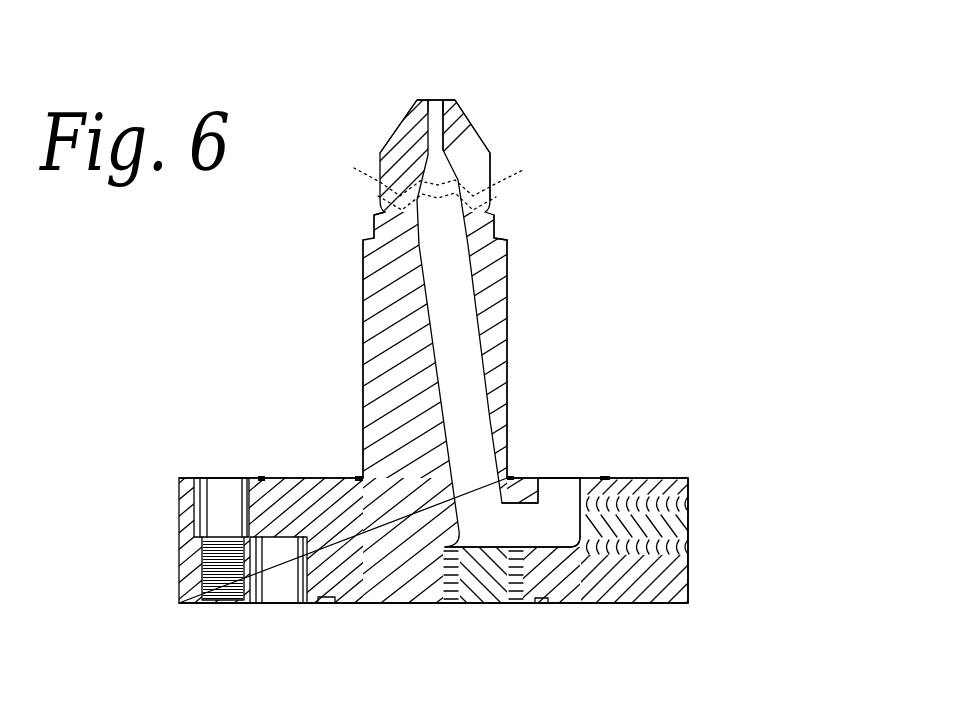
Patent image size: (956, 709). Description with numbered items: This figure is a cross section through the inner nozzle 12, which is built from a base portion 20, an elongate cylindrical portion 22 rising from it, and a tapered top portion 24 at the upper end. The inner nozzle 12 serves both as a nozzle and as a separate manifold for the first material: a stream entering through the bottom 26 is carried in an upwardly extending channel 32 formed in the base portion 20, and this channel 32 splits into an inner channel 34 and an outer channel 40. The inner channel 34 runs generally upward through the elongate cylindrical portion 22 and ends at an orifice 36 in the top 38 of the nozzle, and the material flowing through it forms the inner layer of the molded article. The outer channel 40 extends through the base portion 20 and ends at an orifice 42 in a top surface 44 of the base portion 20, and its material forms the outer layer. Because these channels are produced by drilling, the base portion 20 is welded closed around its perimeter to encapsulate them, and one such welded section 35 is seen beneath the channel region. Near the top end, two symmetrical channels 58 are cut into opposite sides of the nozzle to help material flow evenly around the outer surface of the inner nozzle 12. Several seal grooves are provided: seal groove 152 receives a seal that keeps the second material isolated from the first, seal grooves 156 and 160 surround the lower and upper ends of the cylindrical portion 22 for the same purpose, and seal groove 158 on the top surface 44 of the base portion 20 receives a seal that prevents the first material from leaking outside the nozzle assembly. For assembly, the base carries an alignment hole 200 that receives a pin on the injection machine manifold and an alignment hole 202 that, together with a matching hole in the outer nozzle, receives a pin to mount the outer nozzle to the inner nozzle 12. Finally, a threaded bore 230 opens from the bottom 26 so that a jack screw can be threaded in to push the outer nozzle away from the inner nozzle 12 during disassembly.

The inner nozzle 12 is at (507, 278).
The base portion 20 is at (305, 478).
The elongate cylindrical portion 22 is at (377, 347).
The tapered top portion 24 is at (472, 138).
The bottom 26 is at (635, 603).
The channel 32 is at (497, 517).
The inner channel 34 is at (460, 328).
The welded section 35 is at (480, 602).
The orifice 36 is at (432, 99).
The top 38 is at (447, 97).
The outer channel 40 is at (523, 527).
The orifice 42 is at (565, 478).
The top surface 44 is at (673, 477).
The symmetrical channels 58 is at (434, 177).
The seal groove 152 is at (327, 600).
The seal groove 156 is at (357, 477).
The seal groove 158 is at (262, 478).
The seal groove 160 is at (368, 237).
The alignment hole 200 is at (272, 590).
The alignment hole 202 is at (220, 516).
The threaded bore 230 is at (223, 573).